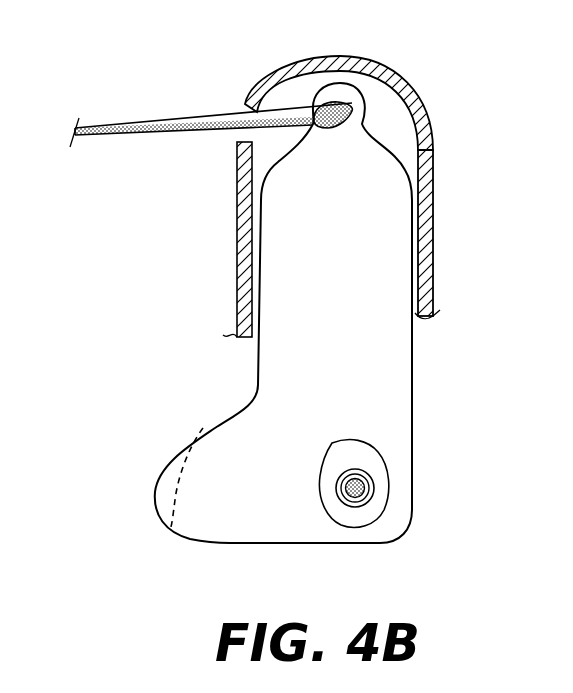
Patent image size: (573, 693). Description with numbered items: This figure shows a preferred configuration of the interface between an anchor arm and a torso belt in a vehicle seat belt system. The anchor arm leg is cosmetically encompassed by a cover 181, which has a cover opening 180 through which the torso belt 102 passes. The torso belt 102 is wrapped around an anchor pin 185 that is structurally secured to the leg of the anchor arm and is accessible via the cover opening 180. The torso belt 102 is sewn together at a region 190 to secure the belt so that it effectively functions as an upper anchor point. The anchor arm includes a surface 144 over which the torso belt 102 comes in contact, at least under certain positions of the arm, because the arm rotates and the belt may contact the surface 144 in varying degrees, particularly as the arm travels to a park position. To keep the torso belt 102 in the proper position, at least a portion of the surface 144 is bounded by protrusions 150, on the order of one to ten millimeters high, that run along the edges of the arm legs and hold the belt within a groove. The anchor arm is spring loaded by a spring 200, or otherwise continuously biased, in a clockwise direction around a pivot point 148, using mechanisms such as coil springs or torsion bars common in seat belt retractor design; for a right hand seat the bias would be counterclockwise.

The torso belt 102 is at (112, 127).
The surface 144 is at (172, 535).
The pivot point 148 is at (363, 468).
The protrusions 150 is at (153, 490).
The cover opening 180 is at (243, 108).
The cover 181 is at (424, 90).
The anchor pin 185 is at (385, 124).
The region 190 is at (197, 134).
The spring 200 is at (397, 462).